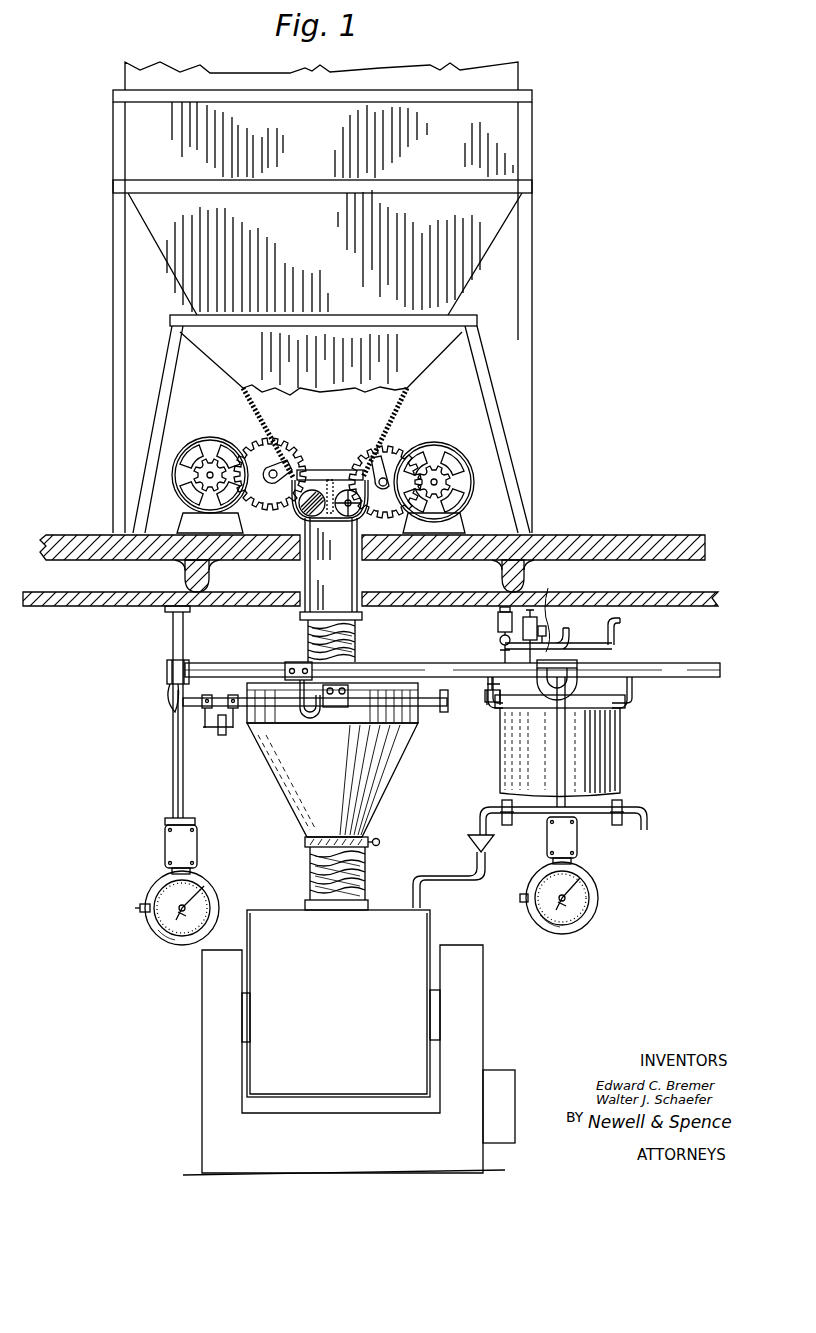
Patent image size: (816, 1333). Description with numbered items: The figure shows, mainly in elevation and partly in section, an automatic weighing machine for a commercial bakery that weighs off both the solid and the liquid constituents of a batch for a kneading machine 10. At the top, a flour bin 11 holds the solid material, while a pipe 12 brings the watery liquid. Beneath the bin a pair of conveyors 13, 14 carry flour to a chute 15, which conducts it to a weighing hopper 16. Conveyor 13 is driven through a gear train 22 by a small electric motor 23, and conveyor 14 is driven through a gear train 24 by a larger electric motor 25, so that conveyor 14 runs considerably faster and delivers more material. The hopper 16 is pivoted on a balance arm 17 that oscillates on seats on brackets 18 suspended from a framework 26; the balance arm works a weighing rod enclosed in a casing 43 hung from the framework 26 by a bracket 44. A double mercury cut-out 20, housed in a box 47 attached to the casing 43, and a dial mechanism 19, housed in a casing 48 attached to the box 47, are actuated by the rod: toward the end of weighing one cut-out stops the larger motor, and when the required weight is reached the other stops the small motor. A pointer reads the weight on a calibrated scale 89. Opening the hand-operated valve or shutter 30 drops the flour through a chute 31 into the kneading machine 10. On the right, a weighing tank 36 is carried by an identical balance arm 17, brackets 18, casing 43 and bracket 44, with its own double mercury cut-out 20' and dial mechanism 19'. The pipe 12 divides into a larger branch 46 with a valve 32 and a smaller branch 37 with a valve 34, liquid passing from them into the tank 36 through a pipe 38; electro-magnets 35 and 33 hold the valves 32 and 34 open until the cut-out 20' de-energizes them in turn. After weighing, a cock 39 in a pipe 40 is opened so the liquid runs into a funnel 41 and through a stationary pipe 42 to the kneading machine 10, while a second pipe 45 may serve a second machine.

The kneading machine 10 is at (413, 968).
The flour bin 11 is at (456, 272).
The pipe 12 is at (622, 624).
The conveyor 13 is at (313, 489).
The conveyor 14 is at (348, 489).
The chute 15 is at (358, 578).
The weighing hopper 16 is at (391, 774).
The balance arm 17 is at (262, 708).
The brackets 18 is at (295, 662).
The dial mechanism 19 is at (197, 908).
The dial mechanism 19' is at (579, 898).
The double mercury cut-out 20 is at (196, 849).
The double mercury cut-out 20' is at (580, 840).
The gear train 22 is at (258, 445).
The small electric motor 23 is at (205, 438).
The gear train 24 is at (399, 447).
The larger electric motor 25 is at (448, 456).
The framework 26 is at (254, 663).
The valve or shutter 30 is at (375, 838).
The chute 31 is at (366, 877).
The valve 32 is at (527, 629).
The electro-magnet 33 is at (497, 620).
The valve 34 is at (499, 643).
The electro-magnet 35 is at (549, 610).
The weighing tank 36 is at (622, 760).
The smaller branch 37 is at (566, 628).
The pipe 38 is at (486, 690).
The cock 39 is at (502, 805).
The pipe 40 is at (520, 817).
The funnel 41 is at (495, 845).
The stationary pipe 42 is at (452, 882).
The casing 43 is at (173, 768).
The bracket 44 is at (168, 690).
The second pipe 45 is at (613, 814).
The larger branch 46 is at (544, 626).
The box 47 is at (178, 848).
The casing 48 is at (160, 890).
The calibrated scale 89 is at (168, 935).